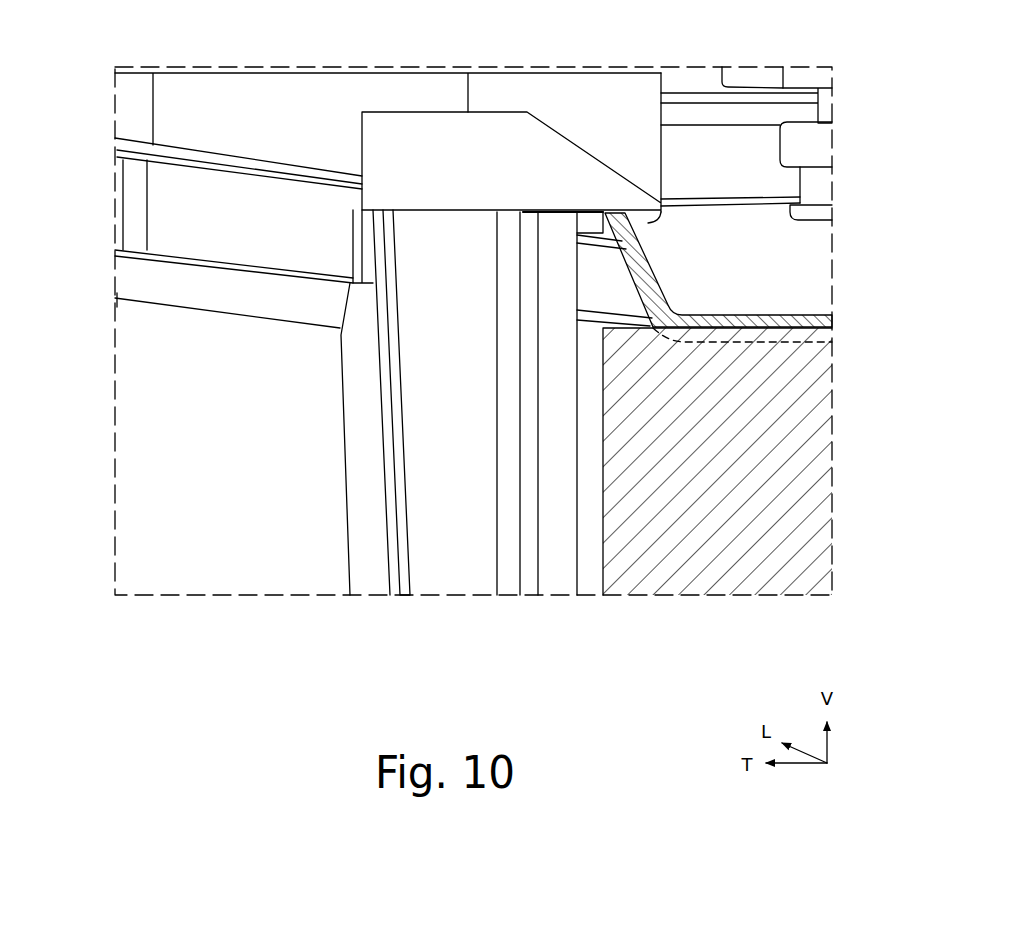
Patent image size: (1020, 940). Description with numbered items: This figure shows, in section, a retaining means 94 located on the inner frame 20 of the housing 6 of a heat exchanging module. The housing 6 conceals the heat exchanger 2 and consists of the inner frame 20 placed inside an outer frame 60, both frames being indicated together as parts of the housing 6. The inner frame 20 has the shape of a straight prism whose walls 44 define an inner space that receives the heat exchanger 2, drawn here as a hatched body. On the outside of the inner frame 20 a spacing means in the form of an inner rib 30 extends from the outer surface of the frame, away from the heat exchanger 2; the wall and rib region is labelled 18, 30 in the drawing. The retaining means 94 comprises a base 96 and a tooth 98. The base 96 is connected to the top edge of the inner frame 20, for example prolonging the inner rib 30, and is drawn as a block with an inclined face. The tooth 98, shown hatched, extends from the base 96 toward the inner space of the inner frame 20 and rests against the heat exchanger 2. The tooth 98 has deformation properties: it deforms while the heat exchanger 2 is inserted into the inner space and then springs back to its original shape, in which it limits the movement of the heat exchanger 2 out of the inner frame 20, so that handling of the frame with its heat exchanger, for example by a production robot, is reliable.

The heat exchanger 2 is at (823, 365).
The housing 6 is at (40, 162).
The side member 18 is at (436, 454).
The inner frame 20 is at (160, 212).
The inner rib 30 is at (467, 555).
The walls 44 is at (553, 547).
The outer frame 60 is at (363, 470).
The retaining means 94 is at (375, 108).
The base 96 is at (492, 147).
The tooth 98 is at (622, 193).